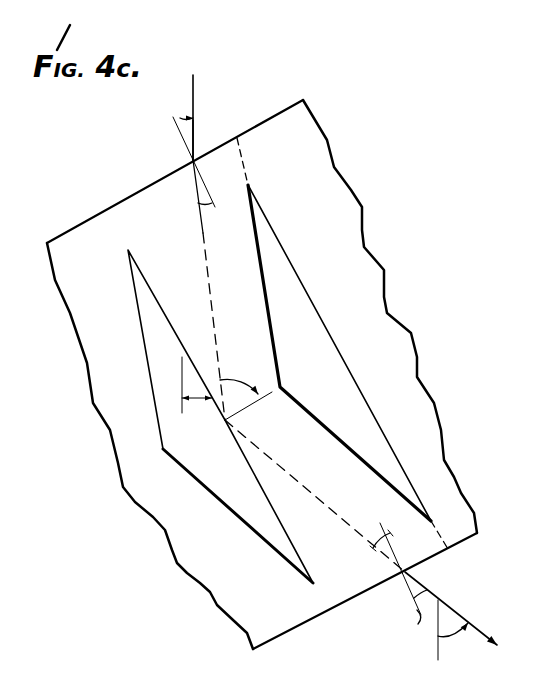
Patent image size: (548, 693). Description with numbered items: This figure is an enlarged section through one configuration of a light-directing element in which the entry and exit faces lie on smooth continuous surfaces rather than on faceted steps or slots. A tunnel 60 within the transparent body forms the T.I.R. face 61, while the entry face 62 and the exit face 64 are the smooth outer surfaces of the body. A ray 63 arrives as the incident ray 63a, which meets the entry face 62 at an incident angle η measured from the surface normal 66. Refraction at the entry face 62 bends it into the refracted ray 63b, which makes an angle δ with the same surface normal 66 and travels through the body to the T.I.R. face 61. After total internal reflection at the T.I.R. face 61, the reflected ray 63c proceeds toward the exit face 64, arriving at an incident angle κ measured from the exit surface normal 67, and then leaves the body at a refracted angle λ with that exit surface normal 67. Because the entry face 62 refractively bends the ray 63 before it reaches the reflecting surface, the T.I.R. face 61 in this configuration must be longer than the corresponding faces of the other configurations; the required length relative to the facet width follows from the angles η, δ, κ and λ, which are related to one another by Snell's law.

The tunnel 60 is at (203, 467).
The T.I.R. face 61 is at (157, 308).
The entry face 62 is at (107, 207).
The ray 63 is at (207, 93).
The incident ray 63a is at (197, 137).
The refracted ray 63b is at (215, 313).
The reflected ray 63c is at (322, 500).
The exit face 64 is at (319, 617).
The surface normal 66 is at (210, 193).
The exit surface normal 67 is at (403, 553).